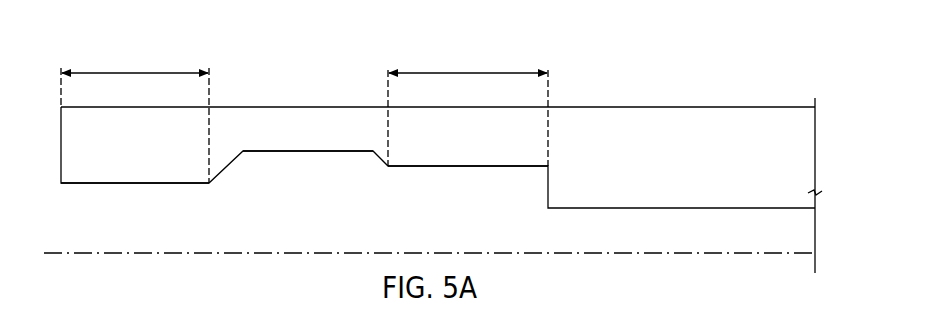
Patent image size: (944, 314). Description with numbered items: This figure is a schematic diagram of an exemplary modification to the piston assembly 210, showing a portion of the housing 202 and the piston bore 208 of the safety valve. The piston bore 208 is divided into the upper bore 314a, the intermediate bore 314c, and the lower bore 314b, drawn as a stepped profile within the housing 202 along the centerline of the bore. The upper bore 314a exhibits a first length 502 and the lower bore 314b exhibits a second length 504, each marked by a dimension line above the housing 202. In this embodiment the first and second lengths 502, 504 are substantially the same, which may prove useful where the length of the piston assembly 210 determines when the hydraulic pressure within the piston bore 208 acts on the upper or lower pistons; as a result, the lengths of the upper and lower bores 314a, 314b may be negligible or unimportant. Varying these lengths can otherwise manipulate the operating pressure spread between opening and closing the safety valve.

The piston assembly 210 is at (247, 50).
The housing 202 is at (676, 120).
The piston bore 208 is at (346, 233).
The upper bore 314a is at (130, 182).
The lower bore 314b is at (454, 160).
The intermediate bore 314c is at (267, 150).
The first length 502 is at (117, 73).
The second length 504 is at (449, 73).